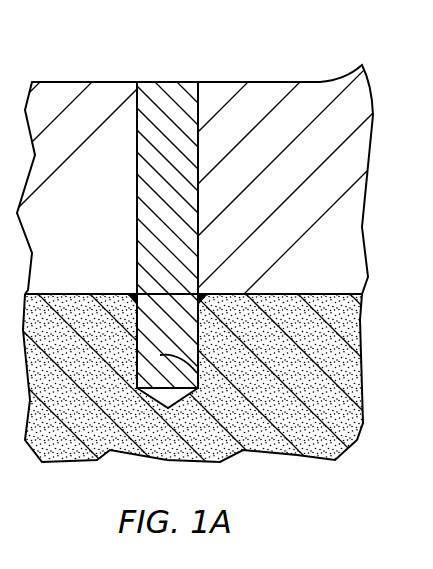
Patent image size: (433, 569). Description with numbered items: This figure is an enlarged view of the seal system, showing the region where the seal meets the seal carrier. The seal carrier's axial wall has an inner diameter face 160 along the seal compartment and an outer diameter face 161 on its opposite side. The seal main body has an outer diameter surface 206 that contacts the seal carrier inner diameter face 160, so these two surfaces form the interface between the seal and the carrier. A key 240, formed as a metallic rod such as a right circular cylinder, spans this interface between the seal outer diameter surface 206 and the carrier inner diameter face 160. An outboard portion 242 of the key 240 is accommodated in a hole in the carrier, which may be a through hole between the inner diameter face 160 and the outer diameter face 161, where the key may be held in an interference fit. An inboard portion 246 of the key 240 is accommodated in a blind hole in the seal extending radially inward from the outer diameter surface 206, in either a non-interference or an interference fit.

The outer diameter face 161 is at (72, 82).
The outboard portion of the key 242 is at (168, 112).
The key 240 is at (184, 178).
The outer diameter surface 206 is at (237, 294).
The inner diameter face 160 is at (270, 294).
The inboard portion of the key 246 is at (197, 390).